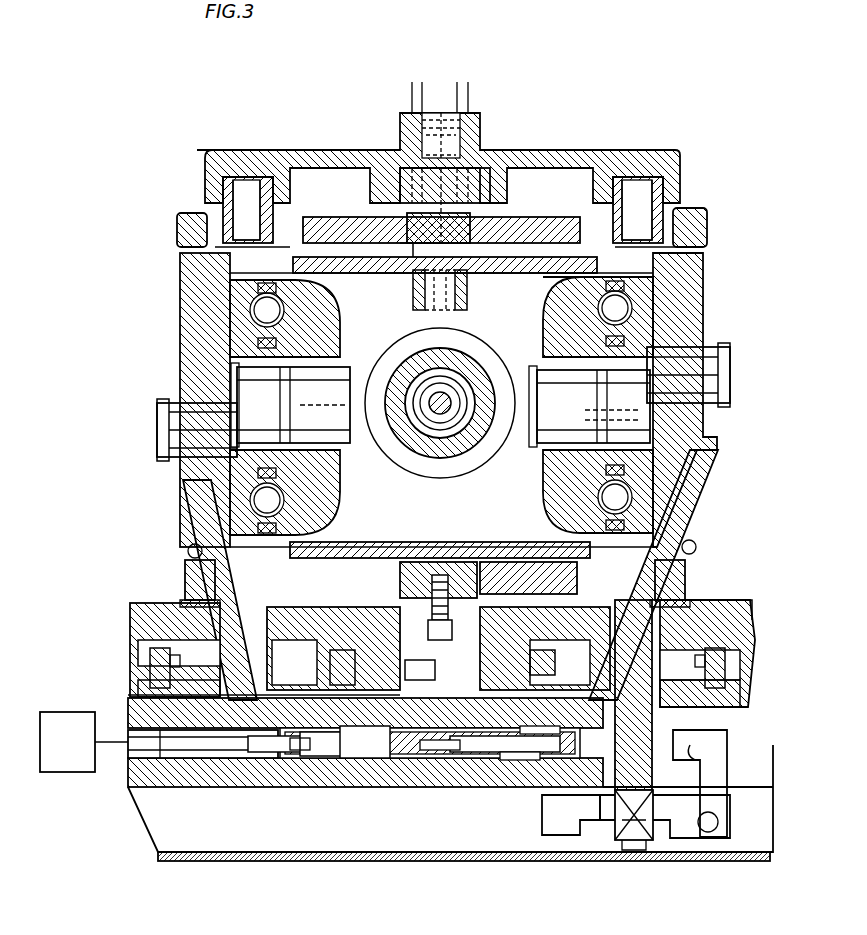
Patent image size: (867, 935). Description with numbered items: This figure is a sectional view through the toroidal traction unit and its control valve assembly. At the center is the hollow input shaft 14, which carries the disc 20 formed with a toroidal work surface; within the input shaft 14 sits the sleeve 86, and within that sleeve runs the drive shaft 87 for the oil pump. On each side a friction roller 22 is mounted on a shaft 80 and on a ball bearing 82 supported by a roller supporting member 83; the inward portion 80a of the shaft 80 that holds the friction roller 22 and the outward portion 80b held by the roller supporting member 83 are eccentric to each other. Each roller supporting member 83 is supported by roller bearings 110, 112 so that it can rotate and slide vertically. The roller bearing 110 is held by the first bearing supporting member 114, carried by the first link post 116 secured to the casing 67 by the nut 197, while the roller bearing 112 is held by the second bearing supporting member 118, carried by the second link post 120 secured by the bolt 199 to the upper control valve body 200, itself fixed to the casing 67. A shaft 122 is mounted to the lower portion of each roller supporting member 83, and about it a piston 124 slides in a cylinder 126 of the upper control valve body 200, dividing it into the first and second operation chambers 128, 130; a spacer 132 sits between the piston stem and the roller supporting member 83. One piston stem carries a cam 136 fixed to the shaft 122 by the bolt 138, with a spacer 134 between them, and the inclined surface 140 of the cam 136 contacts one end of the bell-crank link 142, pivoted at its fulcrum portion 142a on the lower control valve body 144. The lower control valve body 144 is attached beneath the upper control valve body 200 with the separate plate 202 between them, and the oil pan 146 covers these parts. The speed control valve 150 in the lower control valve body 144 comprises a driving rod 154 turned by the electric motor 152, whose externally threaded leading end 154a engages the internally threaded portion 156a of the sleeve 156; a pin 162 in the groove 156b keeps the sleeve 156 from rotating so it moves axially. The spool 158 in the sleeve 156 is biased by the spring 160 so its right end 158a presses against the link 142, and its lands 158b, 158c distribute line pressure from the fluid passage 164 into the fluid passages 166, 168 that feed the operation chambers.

The input shaft 14 is at (440, 399).
The disc 20 is at (505, 312).
The friction roller 22 is at (553, 323).
The casing 67 is at (500, 158).
The shaft 80 is at (352, 378).
The inward portion 80a is at (342, 437).
The outward portion 80b is at (170, 422).
The ball bearing 82 is at (275, 308).
The roller supporting member 83 is at (180, 281).
The sleeve 86 is at (450, 420).
The drive shaft 87 is at (418, 455).
The roller bearing 110 is at (200, 213).
The roller bearing 112 is at (186, 570).
The first bearing supporting member 114 is at (520, 217).
The first link post 116 is at (468, 278).
The second bearing supporting member 118 is at (520, 542).
The second link post 120 is at (450, 545).
The shaft 122 is at (285, 545).
The piston 124 is at (150, 655).
The cylinder 126 is at (130, 640).
The first operation chamber 128 is at (180, 655).
The second operation chamber 130 is at (140, 685).
The spacer 132 is at (190, 600).
The spacer 134 is at (520, 760).
The cam 136 is at (542, 822).
The bolt 138 is at (622, 845).
The inclined surface 140 is at (575, 808).
The link 142 is at (727, 748).
The fulcrum portion 142a is at (715, 832).
The lower control valve body 144 is at (188, 787).
The oil pan 146 is at (347, 861).
The speed control valve 150 is at (398, 787).
The electric motor 152 is at (62, 712).
The driving rod 154 is at (265, 760).
The externally threaded leading end 154a is at (298, 755).
The sleeve 156 is at (332, 758).
The internally threaded portion 156a is at (303, 760).
The groove 156b is at (302, 668).
The spool 158 is at (465, 760).
The right end 158a is at (700, 760).
The land 158b is at (430, 760).
The land 158c is at (510, 760).
The spring 160 is at (352, 760).
The pin 162 is at (405, 672).
The fluid passage 164 is at (485, 660).
The fluid passage 166 is at (380, 680).
The fluid passage 168 is at (525, 665).
The nut 197 is at (412, 272).
The bolt 199 is at (436, 575).
The upper control valve body 200 is at (730, 620).
The separate plate 202 is at (128, 697).